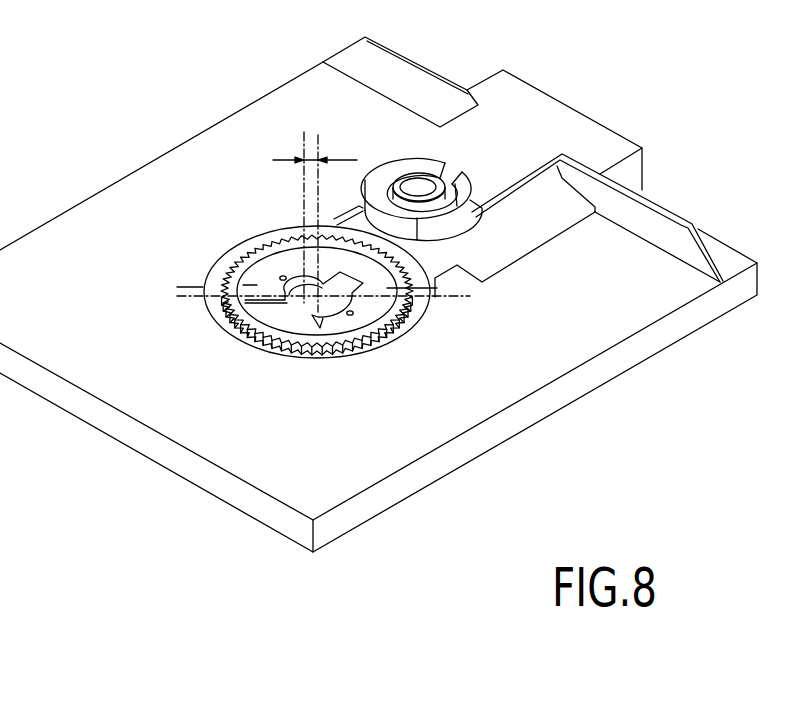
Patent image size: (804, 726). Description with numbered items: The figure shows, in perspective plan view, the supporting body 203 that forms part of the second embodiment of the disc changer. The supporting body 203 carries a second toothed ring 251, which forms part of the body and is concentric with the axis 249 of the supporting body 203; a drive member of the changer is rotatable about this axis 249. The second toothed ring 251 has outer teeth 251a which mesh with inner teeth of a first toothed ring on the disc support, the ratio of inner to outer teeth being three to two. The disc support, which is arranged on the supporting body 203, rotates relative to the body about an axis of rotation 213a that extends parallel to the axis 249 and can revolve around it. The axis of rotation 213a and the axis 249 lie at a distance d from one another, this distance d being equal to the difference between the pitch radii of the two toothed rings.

The supporting body 203 is at (200, 437).
The second toothed ring 251 is at (252, 315).
The outer teeth 251a is at (390, 327).
The axis 249 is at (320, 154).
The axis of rotation 213a is at (301, 149).
The distance d is at (302, 166).